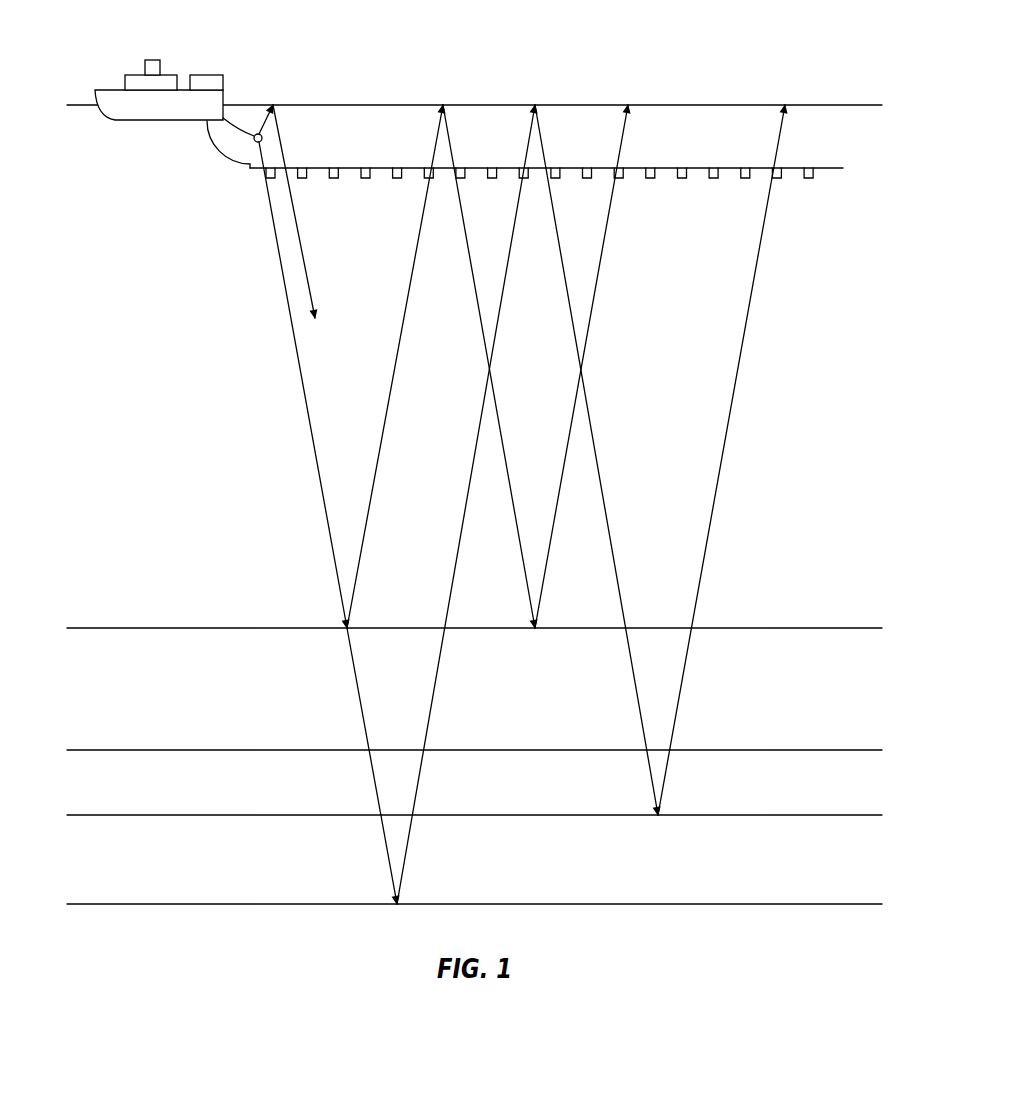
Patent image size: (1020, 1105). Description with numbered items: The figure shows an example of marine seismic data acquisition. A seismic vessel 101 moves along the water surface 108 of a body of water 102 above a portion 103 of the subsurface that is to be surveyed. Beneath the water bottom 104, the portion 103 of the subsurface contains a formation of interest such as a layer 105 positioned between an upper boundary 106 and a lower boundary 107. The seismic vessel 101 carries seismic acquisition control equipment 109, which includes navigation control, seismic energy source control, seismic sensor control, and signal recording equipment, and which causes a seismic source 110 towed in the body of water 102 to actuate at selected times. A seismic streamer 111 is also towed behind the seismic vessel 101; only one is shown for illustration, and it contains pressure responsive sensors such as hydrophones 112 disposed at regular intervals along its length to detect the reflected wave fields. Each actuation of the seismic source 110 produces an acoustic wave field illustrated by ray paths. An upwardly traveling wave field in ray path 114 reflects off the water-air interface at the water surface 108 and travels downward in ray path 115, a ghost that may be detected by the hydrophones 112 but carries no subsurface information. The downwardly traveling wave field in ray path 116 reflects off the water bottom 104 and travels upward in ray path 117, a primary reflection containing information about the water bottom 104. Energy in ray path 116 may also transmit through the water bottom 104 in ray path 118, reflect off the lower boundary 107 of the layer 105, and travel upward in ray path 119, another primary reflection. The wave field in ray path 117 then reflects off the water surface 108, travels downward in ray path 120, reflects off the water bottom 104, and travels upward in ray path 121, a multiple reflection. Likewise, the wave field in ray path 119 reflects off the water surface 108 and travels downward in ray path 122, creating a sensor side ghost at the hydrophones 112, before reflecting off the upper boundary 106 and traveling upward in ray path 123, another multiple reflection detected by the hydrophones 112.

The seismic vessel 101 is at (153, 60).
The body of water 102 is at (180, 371).
The portion of the subsurface 103 is at (202, 711).
The water bottom 104 is at (162, 628).
The layer 105 is at (572, 874).
The upper boundary 106 is at (162, 815).
The lower boundary 107 is at (162, 904).
The water surface 108 is at (570, 105).
The seismic acquisition control equipment 109 is at (210, 75).
The seismic source 110 is at (257, 147).
The seismic streamer 111 is at (698, 168).
The hydrophones 112 is at (340, 167).
The ray path 114 is at (260, 128).
The ray path 115 is at (302, 233).
The ray path 116 is at (318, 477).
The ray path 117 is at (383, 472).
The ray path 118 is at (360, 712).
The ray path 119 is at (432, 712).
The ray path 120 is at (527, 580).
The ray path 121 is at (543, 580).
The ray path 122 is at (642, 712).
The ray path 123 is at (678, 712).